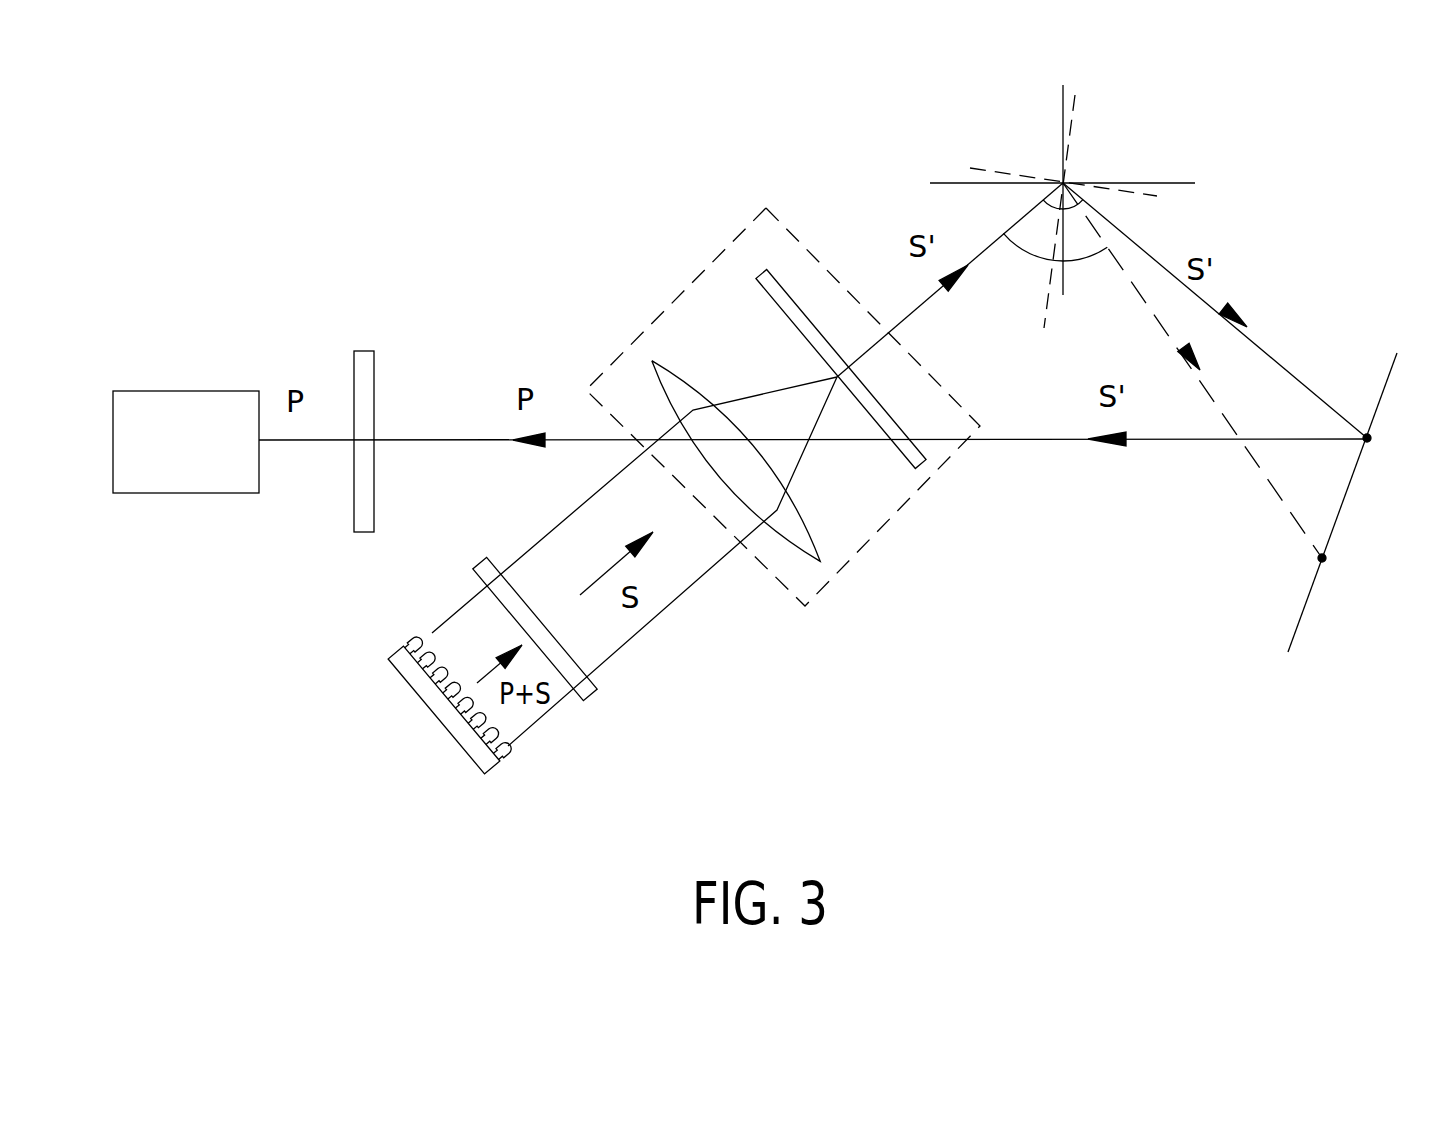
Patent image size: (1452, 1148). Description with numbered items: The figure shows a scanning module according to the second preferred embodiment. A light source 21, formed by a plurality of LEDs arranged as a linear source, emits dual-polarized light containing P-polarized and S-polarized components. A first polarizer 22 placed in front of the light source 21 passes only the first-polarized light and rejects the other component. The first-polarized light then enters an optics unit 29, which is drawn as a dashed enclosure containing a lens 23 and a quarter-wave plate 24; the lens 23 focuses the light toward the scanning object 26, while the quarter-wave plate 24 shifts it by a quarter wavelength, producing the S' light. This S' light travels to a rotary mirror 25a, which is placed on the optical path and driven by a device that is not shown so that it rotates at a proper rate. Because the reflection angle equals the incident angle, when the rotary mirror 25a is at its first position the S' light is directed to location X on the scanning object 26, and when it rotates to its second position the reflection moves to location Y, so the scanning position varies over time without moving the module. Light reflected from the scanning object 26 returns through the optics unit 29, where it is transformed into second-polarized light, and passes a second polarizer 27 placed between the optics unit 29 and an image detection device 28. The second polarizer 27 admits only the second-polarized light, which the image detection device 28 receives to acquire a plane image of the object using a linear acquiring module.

The light source 21 is at (490, 770).
The first polarizer 22 is at (590, 700).
The lens 23 is at (797, 545).
The quarter-wave plate 24 is at (915, 468).
The rotary mirror 25a is at (1186, 142).
The scanning object 26 is at (1396, 572).
The second polarizer 27 is at (364, 355).
The image detection device 28 is at (178, 407).
The optics unit 29 is at (738, 235).